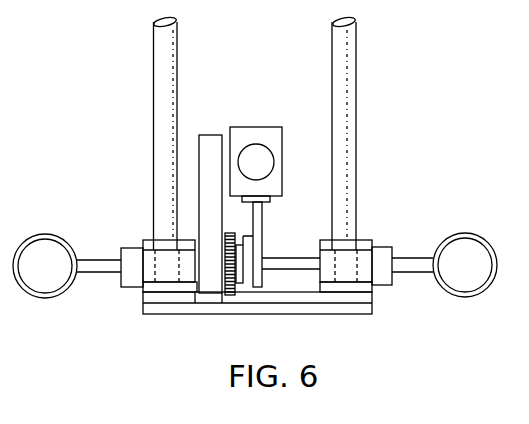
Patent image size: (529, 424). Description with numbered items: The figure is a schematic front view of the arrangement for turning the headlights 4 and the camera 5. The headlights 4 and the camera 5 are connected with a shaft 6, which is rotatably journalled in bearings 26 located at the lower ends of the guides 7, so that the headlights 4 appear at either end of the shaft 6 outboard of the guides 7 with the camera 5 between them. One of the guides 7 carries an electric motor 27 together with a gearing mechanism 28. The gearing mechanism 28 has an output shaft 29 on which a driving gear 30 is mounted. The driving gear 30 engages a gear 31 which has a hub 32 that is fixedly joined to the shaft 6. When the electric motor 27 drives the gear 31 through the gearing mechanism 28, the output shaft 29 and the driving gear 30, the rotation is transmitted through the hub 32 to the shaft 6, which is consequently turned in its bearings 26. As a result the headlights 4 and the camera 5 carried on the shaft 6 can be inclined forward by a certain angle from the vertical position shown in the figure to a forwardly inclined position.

The headlights 4 is at (54, 247).
The camera 5 is at (261, 127).
The shaft 6 is at (286, 270).
The guides 7 is at (171, 76).
The bearings 26 is at (134, 248).
The electric motor 27 is at (213, 135).
The gearing mechanism 28 is at (205, 233).
The output shaft 29 is at (229, 270).
The driving gear 30 is at (229, 268).
The gear 31 is at (232, 240).
The hub 32 is at (240, 247).